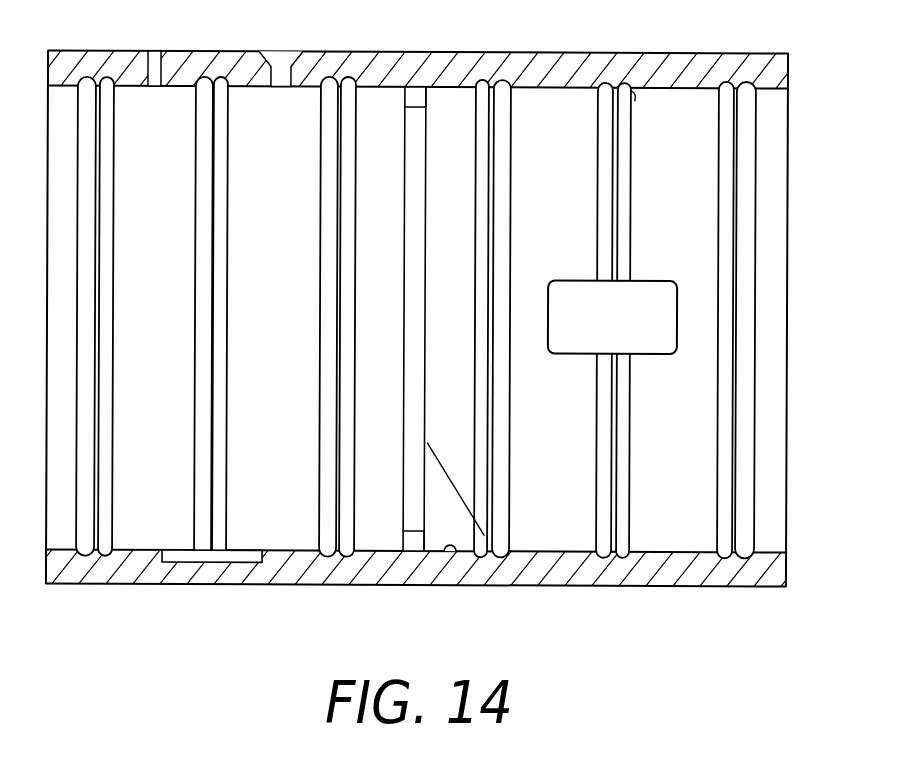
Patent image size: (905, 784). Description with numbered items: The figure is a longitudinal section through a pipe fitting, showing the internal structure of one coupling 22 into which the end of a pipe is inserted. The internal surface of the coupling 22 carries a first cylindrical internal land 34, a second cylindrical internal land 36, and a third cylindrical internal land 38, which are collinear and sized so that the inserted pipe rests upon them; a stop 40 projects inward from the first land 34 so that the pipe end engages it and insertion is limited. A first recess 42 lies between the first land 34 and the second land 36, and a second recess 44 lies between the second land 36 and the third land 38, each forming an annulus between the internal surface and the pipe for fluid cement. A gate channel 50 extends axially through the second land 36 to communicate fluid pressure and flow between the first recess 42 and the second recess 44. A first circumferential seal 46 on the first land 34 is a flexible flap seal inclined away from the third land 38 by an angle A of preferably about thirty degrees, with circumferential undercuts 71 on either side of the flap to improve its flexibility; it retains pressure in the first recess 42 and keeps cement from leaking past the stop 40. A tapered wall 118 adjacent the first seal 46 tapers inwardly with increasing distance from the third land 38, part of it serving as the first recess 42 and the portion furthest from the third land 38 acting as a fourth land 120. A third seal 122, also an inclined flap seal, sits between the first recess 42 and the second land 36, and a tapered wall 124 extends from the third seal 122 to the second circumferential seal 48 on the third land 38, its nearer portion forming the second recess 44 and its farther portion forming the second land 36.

The coupling 22 is at (298, 584).
The first cylindrical internal land 34 is at (452, 540).
The second cylindrical internal land 36 is at (636, 552).
The third cylindrical internal land 38 is at (768, 551).
The stop 40 is at (415, 530).
The first recess 42 is at (558, 100).
The second recess 44 is at (699, 102).
The first circumferential seal 46 is at (479, 88).
The second circumferential seal 48 is at (758, 102).
The gate channel 50 is at (665, 280).
The circumferential undercuts 71 is at (503, 88).
The tapered wall 118 is at (546, 551).
The fourth land 120 is at (512, 556).
The third seal 122 is at (621, 95).
The tapered wall 124 is at (687, 551).
The angle A is at (535, 468).